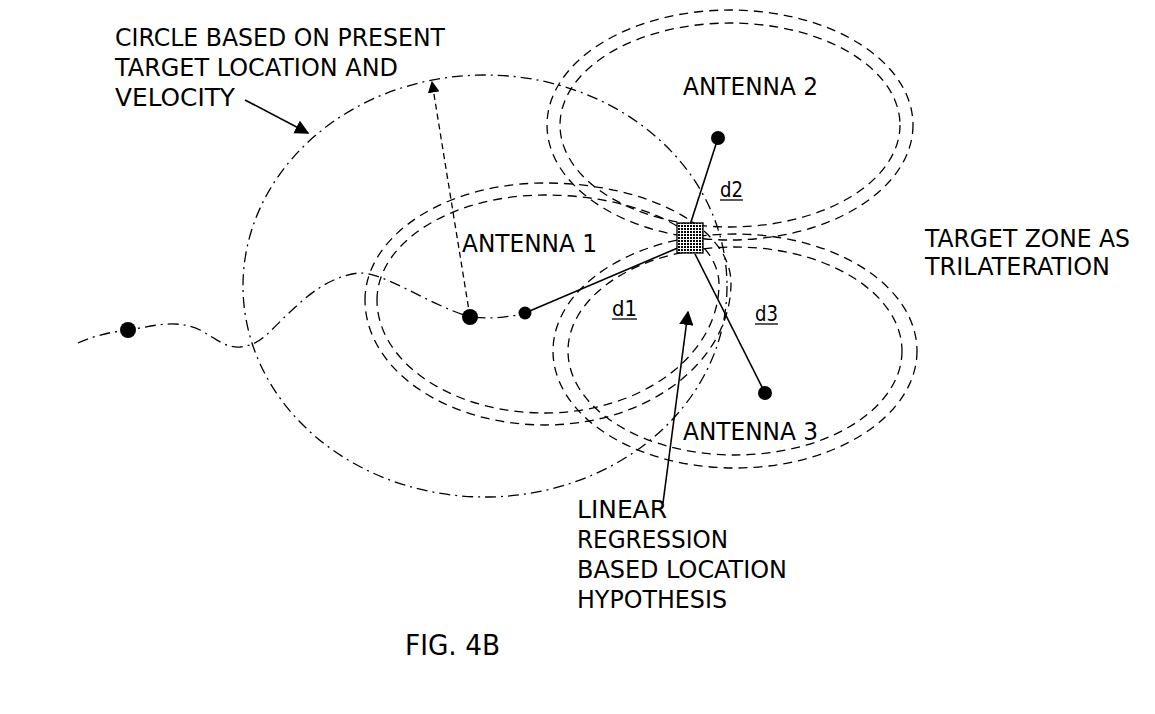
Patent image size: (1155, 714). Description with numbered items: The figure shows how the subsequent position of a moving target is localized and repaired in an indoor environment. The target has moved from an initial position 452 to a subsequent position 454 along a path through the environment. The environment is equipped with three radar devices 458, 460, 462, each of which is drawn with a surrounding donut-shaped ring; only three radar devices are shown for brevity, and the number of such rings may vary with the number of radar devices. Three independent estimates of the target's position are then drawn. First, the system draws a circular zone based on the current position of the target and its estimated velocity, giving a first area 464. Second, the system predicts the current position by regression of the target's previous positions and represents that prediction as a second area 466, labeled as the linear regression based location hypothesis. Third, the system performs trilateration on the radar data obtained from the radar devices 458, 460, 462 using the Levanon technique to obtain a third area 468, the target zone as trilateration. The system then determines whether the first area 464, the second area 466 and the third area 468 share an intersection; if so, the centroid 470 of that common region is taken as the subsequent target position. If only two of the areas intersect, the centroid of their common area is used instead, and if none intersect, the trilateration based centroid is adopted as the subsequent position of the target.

The initial position 452 is at (132, 322).
The subsequent position 454 is at (465, 326).
The radar device 458 is at (523, 321).
The radar device 460 is at (725, 138).
The radar device 462 is at (772, 397).
The first area 464 is at (262, 207).
The second area 466 is at (637, 365).
The third area 468 is at (800, 210).
The centroid 470 is at (730, 239).